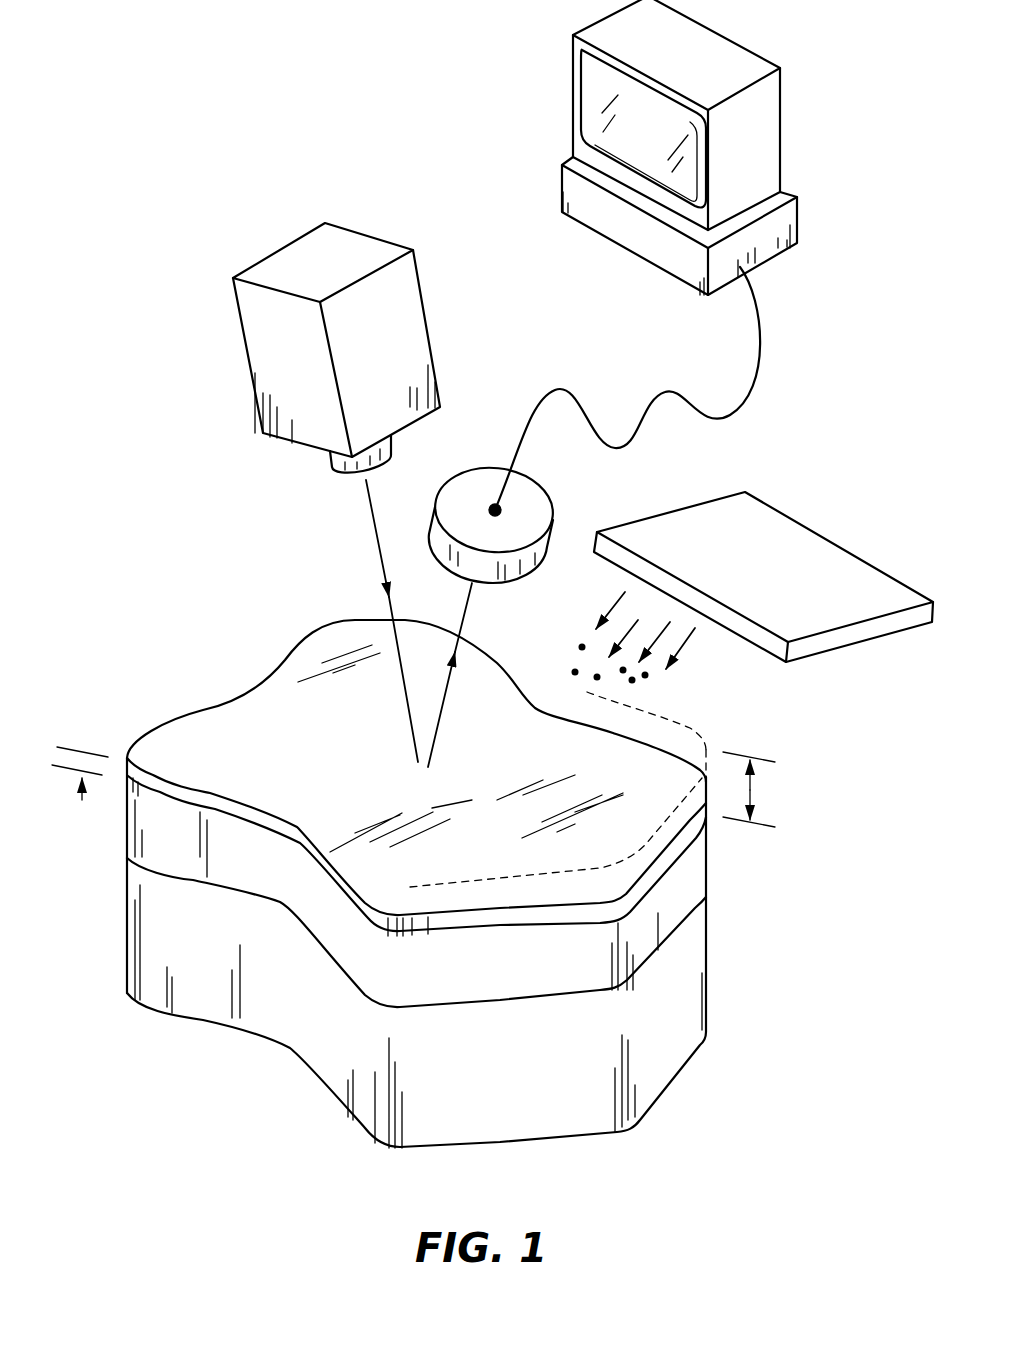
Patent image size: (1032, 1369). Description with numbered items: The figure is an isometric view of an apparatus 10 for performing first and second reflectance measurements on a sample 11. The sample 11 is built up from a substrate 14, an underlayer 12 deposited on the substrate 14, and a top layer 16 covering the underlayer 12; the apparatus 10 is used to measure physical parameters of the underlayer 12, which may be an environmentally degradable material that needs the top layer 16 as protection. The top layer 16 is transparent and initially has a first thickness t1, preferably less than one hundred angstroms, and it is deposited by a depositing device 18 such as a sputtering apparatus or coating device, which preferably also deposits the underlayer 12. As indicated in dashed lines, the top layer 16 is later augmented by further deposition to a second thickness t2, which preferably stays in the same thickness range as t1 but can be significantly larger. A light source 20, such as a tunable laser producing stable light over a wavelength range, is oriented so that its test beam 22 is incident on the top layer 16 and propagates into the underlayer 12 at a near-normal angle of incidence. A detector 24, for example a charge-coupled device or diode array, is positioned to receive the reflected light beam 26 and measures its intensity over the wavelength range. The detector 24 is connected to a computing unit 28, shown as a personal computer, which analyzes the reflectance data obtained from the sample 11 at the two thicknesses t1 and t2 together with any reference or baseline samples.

The apparatus 10 is at (158, 131).
The sample 11 is at (491, 884).
The underlayer 12 is at (702, 867).
The substrate 14 is at (702, 948).
The top layer 16 is at (258, 717).
The depositing device 18 is at (778, 523).
The light source 20 is at (253, 373).
The test beam 22 is at (385, 553).
The detector 24 is at (553, 486).
The reflected light beam 26 is at (468, 615).
The computing unit 28 is at (560, 183).
The first thickness t1 is at (82, 744).
The second thickness t2 is at (751, 797).